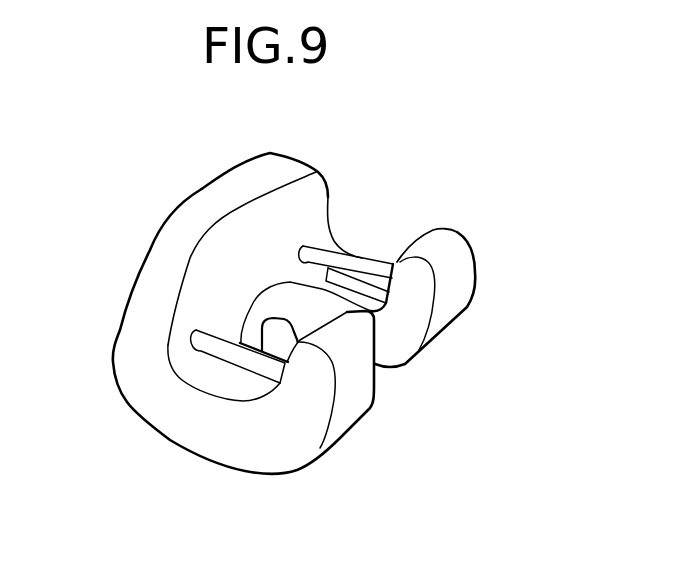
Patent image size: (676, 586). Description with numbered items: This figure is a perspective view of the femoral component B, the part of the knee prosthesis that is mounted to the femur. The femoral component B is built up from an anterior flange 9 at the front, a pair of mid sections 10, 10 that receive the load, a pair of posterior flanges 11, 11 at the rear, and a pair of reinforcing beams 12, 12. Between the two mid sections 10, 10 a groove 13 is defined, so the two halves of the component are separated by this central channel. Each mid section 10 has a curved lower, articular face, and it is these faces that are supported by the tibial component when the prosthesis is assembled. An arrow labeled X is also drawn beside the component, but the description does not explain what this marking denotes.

The anterior flange 9 is at (309, 194).
The mid section 10 is at (397, 262).
The posterior flange 11 is at (456, 271).
The reinforcing beam 12 is at (330, 226).
The groove 13 is at (352, 261).
The femoral component B is at (378, 180).
The direction X is at (208, 484).